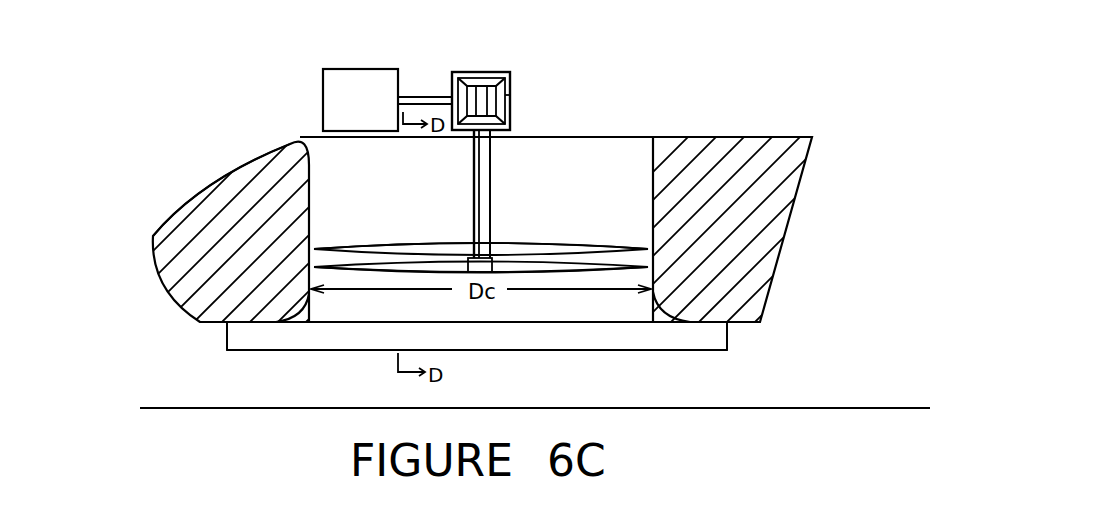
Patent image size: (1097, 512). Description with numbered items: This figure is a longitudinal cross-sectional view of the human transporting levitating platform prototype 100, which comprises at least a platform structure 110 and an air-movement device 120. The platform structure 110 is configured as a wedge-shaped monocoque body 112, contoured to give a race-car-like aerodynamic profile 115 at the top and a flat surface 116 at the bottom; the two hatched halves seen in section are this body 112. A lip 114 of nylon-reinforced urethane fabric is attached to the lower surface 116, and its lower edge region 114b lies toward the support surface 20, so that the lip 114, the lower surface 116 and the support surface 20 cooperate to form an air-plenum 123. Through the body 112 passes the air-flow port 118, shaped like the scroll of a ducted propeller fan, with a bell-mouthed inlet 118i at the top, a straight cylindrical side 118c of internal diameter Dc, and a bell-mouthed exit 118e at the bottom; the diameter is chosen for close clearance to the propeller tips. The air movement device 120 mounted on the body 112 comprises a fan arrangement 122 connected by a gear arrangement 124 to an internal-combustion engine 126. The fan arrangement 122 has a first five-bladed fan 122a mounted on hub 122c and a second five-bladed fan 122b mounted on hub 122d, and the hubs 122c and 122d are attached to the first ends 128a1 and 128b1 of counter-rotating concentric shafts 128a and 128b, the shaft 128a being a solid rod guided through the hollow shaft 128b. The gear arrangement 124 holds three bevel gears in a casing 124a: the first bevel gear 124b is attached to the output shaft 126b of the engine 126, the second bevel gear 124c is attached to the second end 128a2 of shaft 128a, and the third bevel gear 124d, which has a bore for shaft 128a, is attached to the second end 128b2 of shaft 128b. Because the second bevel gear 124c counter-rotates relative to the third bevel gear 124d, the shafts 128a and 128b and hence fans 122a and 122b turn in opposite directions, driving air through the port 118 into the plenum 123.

The support surface 20 is at (840, 408).
The human transporting levitating platform prototype 100 is at (781, 82).
The platform structure 110 is at (816, 346).
The wedge-shaped body 112 is at (512, 228).
The lip 114 is at (226, 337).
The base plate bottom surface 114b is at (227, 350).
The aerodynamic profile 115 is at (232, 178).
The flat surface 116 is at (243, 323).
The air-flow port 118 is at (626, 197).
The straight cylindrical side 118c is at (318, 212).
The bell-mouthed exit 118e is at (307, 323).
The bell-mouthed inlet 118i is at (309, 168).
The air-movement device 120 is at (663, 63).
The fan arrangement 122 is at (559, 278).
The first fan 122a is at (492, 258).
The second fan 122b is at (462, 247).
The hub 122c is at (492, 270).
The hub 122d is at (468, 252).
The air-plenum 123 is at (553, 357).
The gear arrangement 124 is at (600, 56).
The casing 124a is at (488, 72).
The first bevel gear 124b is at (455, 95).
The second bevel gear 124c is at (505, 72).
The third bevel gear 124d is at (502, 108).
The internal-combustion engine 126 is at (385, 112).
The output shaft 126b is at (410, 98).
The shaft 128a is at (480, 210).
The first end 128a1 is at (465, 264).
The second end 128a2 is at (505, 95).
The shaft 128b is at (492, 182).
The first end 128b1 is at (471, 252).
The second end 128b2 is at (492, 140).